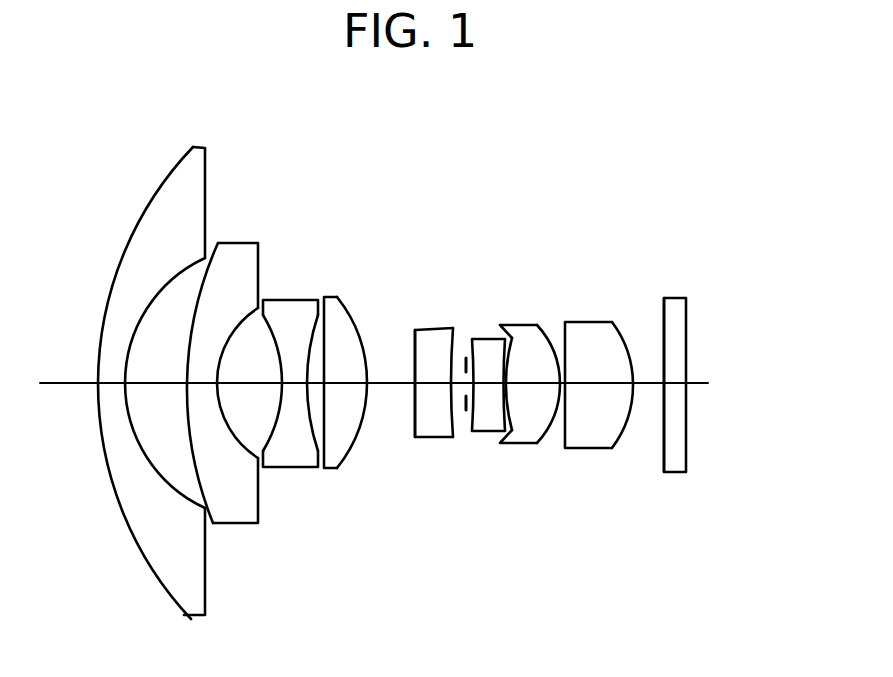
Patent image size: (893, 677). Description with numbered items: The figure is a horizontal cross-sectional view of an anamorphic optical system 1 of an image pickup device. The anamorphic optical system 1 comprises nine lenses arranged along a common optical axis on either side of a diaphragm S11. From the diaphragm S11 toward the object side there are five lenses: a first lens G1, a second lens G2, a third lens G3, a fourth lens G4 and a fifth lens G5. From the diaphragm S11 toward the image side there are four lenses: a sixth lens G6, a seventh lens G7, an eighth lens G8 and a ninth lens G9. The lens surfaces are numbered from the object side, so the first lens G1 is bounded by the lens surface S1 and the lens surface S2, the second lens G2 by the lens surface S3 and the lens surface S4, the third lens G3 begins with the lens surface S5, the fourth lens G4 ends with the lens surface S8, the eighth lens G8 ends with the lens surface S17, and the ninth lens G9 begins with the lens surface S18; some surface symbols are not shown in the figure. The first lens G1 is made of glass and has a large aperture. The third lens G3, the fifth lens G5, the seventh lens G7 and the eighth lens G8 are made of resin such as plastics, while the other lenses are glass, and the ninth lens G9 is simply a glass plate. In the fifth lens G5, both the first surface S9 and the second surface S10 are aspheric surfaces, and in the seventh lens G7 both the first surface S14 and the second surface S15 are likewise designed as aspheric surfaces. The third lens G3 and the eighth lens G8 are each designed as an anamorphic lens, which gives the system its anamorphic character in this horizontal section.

The anamorphic optical system 1 is at (410, 127).
The first lens G1 is at (135, 379).
The second lens G2 is at (178, 370).
The third lens G3 is at (298, 359).
The fourth lens G4 is at (370, 394).
The fifth lens G5 is at (464, 415).
The sixth lens G6 is at (486, 338).
The seventh lens G7 is at (574, 394).
The eighth lens G8 is at (642, 365).
The ninth lens G9 is at (713, 348).
The lens surface s1 S1 is at (148, 562).
The lens surface s2 S2 is at (141, 315).
The lens surface s3 S3 is at (190, 450).
The lens surface s4 S4 is at (226, 418).
The lens surface s5 S5 is at (278, 410).
The lens surface s8 S8 is at (353, 450).
The first surface of fifth lens S9 is at (415, 410).
The second surface of fifth lens S10 is at (453, 425).
The diaphragm S11 is at (466, 356).
The first surface of seventh lens S14 is at (507, 415).
The second surface of seventh lens S15 is at (540, 443).
The lens surface s17 S17 is at (619, 437).
The lens surface s18 S18 is at (664, 447).